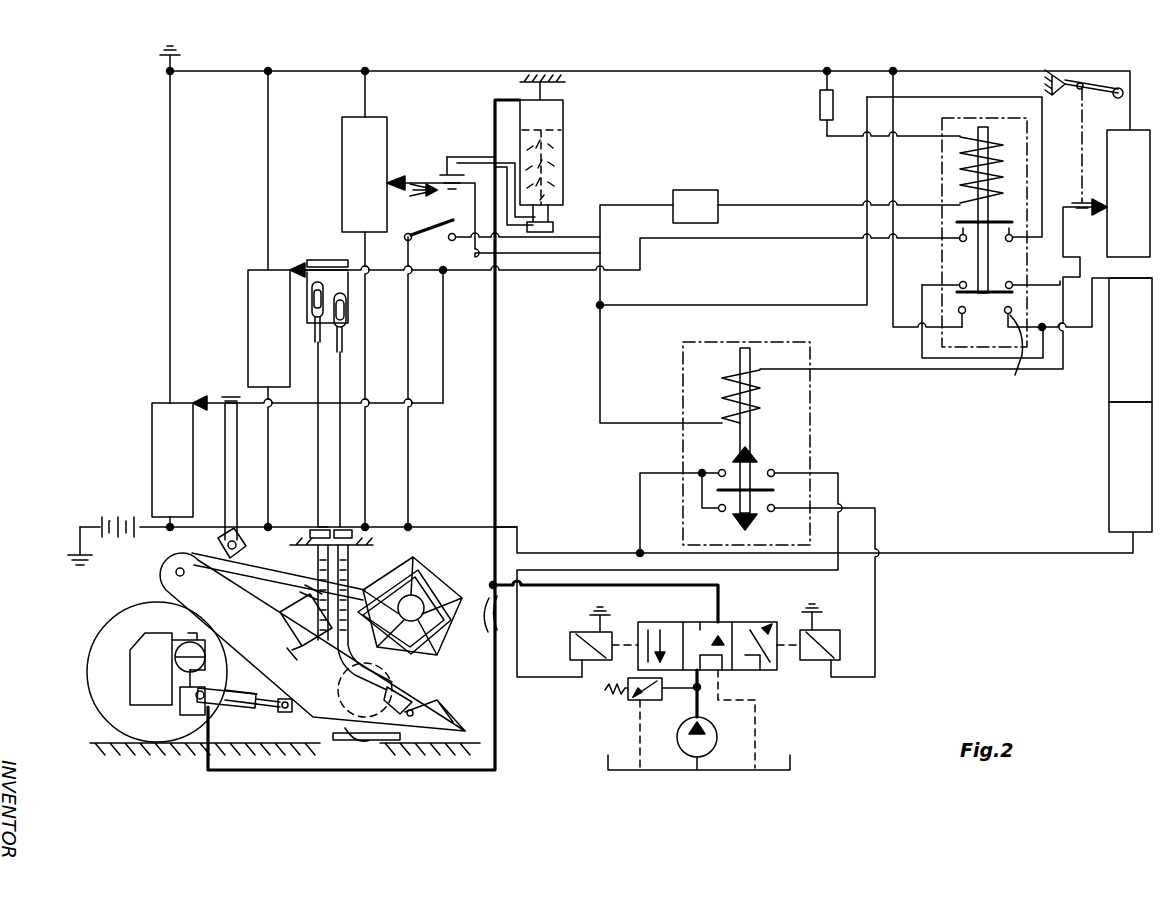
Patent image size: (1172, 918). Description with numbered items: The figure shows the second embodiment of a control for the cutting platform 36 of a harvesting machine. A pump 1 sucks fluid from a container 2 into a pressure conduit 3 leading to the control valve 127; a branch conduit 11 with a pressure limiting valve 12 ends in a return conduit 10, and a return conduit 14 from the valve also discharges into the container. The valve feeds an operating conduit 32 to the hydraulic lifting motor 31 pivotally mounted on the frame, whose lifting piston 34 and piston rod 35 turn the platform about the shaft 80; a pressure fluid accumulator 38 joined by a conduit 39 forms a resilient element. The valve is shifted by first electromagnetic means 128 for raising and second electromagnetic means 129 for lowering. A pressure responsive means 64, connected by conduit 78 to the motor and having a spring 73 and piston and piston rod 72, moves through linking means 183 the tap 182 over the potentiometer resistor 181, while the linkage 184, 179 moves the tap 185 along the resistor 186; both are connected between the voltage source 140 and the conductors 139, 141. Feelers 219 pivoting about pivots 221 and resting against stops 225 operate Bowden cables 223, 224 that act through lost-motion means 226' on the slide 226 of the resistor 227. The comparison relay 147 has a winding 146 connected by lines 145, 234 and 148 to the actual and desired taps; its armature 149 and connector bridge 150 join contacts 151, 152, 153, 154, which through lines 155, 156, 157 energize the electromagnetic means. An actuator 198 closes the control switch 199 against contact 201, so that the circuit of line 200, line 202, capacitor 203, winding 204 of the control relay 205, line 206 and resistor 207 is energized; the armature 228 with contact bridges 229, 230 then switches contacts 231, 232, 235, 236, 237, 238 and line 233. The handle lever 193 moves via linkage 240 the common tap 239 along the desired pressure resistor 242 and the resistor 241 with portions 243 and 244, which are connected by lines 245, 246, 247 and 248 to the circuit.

The pump 1 is at (708, 740).
The container 2 is at (790, 763).
The pressure conduit 3 is at (700, 696).
The return conduit 10 is at (637, 732).
The branch conduit 11 is at (683, 690).
The pressure limiting valve 12 is at (628, 700).
The return conduit 14 is at (758, 708).
The hydraulic lifting motor 31 is at (223, 708).
The operating conduit 32 is at (481, 613).
The lifting piston 34 is at (232, 692).
The piston rod 35 is at (268, 717).
The cutting platform 36 is at (307, 716).
The pressure fluid accumulator 38 is at (185, 643).
The conduit 39 is at (178, 710).
The pressure responsive means 64 is at (580, 142).
The piston and piston rod 72 is at (549, 216).
The spring 73 is at (563, 160).
The conduit 78 is at (497, 430).
The shaft 80 is at (176, 573).
The control valve 127 is at (752, 672).
The first electromagnetic means 128 is at (583, 632).
The second electromagnetic means 129 is at (826, 632).
The conductor 139 is at (431, 96).
The voltage source 140 is at (117, 510).
The conductor 141 is at (548, 548).
The electrical line 145 is at (599, 363).
The winding 146 is at (730, 375).
The relay 147 is at (806, 412).
The line 148 is at (880, 372).
The armature 149 is at (748, 468).
The connector bridge 150 is at (766, 490).
The contact 151 is at (718, 468).
The contact 152 is at (772, 468).
The contact 153 is at (714, 523).
The contact 154 is at (772, 512).
The line 155 is at (640, 495).
The line 156 is at (840, 495).
The line 157 is at (880, 527).
The linkage 179 is at (212, 542).
The potentiometer resistor 181 is at (345, 142).
The movable tap 182 is at (400, 175).
The linking means 183 is at (472, 160).
The link 184 is at (223, 500).
The movable tap 185 is at (318, 392).
The potentiometer resistor 186 is at (155, 412).
The handle lever 193 is at (1085, 84).
The actuator 198 is at (455, 195).
The control switch 199 is at (421, 222).
The control circuit line 200 is at (413, 460).
The contact 201 is at (450, 240).
The line 202 is at (635, 200).
The capacitor 203 is at (698, 192).
The winding 204 is at (958, 140).
The control relay 205 is at (945, 130).
The line 206 is at (835, 140).
The resistor 207 is at (818, 106).
The feeler 219 is at (285, 758).
The pivot 221 is at (438, 716).
The Bowden cable 223 is at (410, 690).
The Bowden cable 224 is at (316, 470).
The stop 225 is at (405, 730).
The movable tap 226 is at (319, 249).
The lost-motion means 226' is at (359, 398).
The resistor 227 is at (250, 283).
The armature 228 is at (975, 235).
The contact bridge 229 is at (993, 207).
The contact bridge 230 is at (992, 310).
The contact 231 is at (966, 247).
The contact 232 is at (1011, 247).
The line 233 is at (738, 240).
The line 234 is at (802, 300).
The contact 235 is at (958, 283).
The contact 236 is at (1013, 283).
The contact 237 is at (955, 312).
The contact 238 is at (1020, 358).
The movable tap 239 is at (1085, 195).
The linkage 240 is at (1103, 144).
The resistor 241 is at (1086, 402).
The resistor 242 is at (1140, 140).
The resistor portion 243 is at (1112, 382).
The resistor portion 244 is at (1118, 472).
The line 245 is at (1094, 262).
The line 246 is at (1080, 330).
The line 247 is at (920, 346).
The line 248 is at (885, 290).